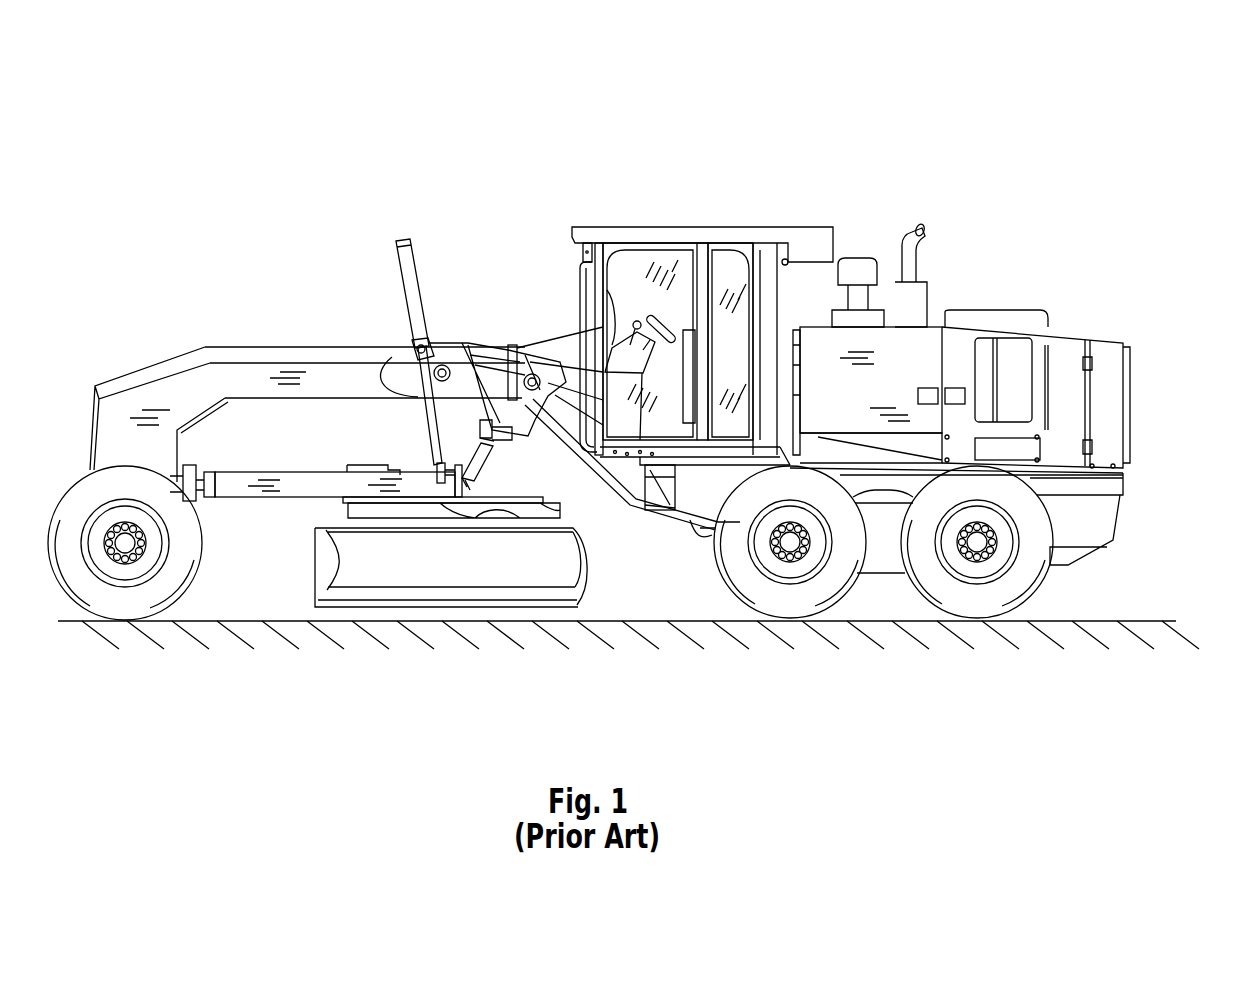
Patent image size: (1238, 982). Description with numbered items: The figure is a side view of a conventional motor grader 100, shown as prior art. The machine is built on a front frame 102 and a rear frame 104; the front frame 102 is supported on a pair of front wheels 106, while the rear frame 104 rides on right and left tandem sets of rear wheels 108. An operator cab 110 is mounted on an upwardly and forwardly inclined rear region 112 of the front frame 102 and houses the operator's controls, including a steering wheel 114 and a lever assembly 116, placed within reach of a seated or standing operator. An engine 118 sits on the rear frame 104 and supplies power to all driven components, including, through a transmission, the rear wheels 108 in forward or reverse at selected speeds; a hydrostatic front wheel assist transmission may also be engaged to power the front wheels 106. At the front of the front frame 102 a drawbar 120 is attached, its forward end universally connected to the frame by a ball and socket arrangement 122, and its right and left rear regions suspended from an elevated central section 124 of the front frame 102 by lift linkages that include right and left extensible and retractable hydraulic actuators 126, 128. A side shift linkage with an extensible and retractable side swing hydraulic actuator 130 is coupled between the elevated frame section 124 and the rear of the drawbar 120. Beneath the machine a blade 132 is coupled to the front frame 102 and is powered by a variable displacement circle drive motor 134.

The motor grader 100 is at (970, 135).
The front frame 102 is at (170, 347).
The rear frame 104 is at (1090, 560).
The front wheels 106 is at (113, 605).
The rear wheels 108 is at (775, 598).
The operator cab 110 is at (742, 222).
The upwardly and forwardly inclined rear region 112 is at (590, 478).
The steering wheel 114 is at (648, 305).
The lever assembly 116 is at (598, 340).
The engine 118 is at (955, 350).
The drawbar 120 is at (297, 477).
The ball and socket arrangement 122 is at (202, 490).
The elevated central section 124 is at (258, 347).
The right hydraulic actuator 126 is at (393, 303).
The left hydraulic actuator 128 is at (395, 263).
The side swing hydraulic actuator 130 is at (480, 455).
The blade 132 is at (318, 590).
The variable displacement circle drive motor 134 is at (372, 465).